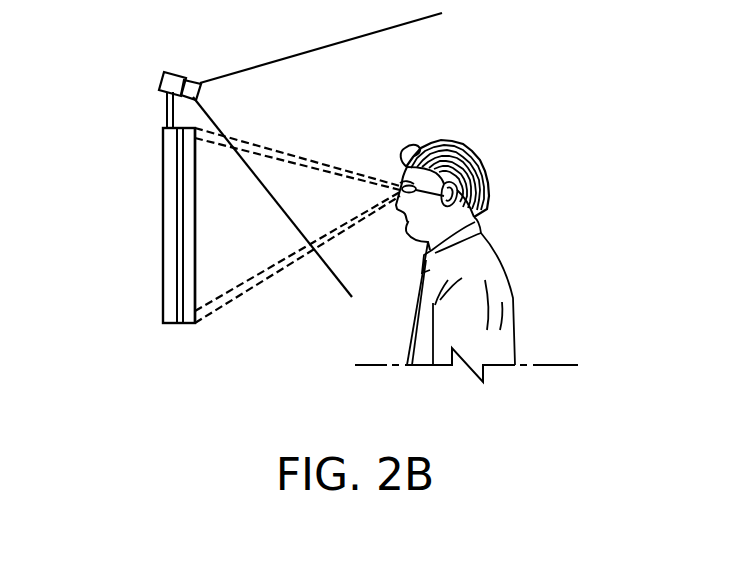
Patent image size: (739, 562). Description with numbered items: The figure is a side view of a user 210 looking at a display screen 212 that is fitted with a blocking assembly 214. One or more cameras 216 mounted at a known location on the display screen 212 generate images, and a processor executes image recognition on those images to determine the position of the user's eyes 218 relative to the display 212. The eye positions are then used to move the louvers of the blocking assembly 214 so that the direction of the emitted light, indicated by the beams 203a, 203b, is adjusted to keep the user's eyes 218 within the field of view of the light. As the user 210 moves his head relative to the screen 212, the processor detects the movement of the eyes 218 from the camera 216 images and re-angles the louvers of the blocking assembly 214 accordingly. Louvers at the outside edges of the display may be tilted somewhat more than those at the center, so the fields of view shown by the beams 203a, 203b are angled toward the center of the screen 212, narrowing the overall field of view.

The camera 216 is at (163, 79).
The display screen 212 is at (155, 255).
The blocking assembly 214 is at (187, 310).
The beam 203a is at (275, 150).
The beam 203b is at (273, 278).
The user 210 is at (466, 253).
The user's eyes 218 is at (482, 216).